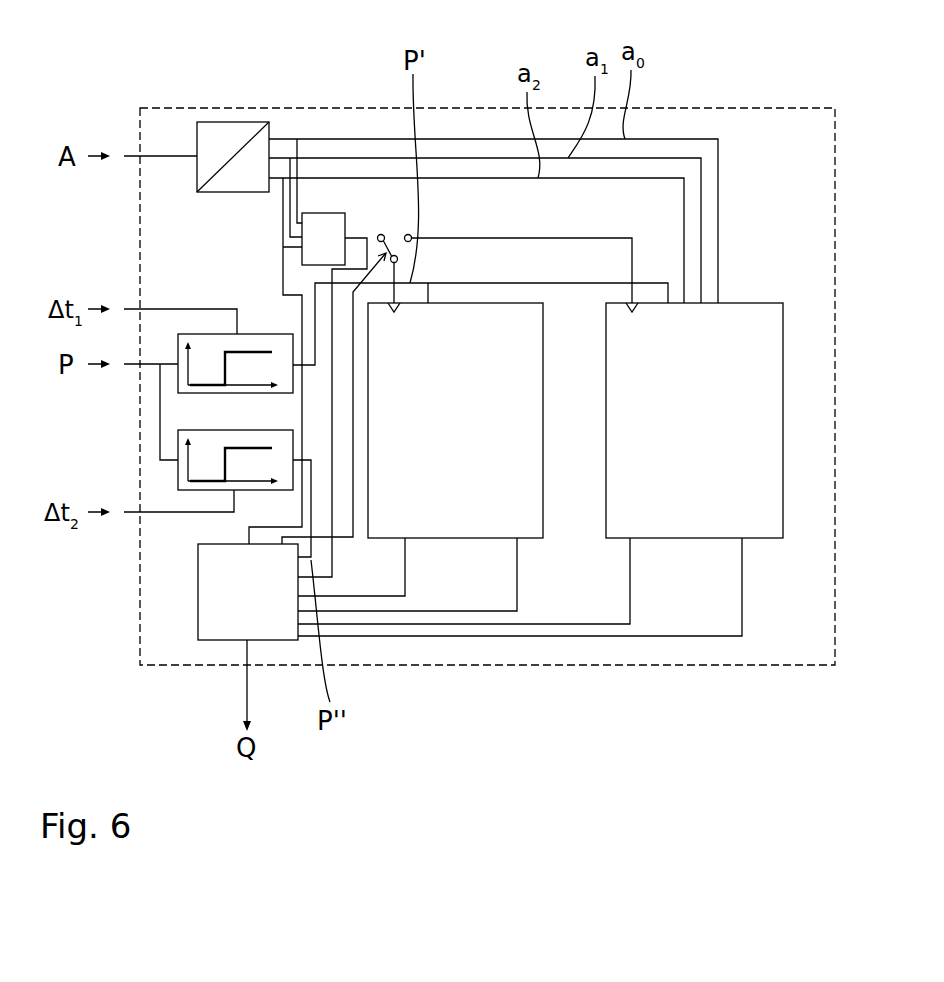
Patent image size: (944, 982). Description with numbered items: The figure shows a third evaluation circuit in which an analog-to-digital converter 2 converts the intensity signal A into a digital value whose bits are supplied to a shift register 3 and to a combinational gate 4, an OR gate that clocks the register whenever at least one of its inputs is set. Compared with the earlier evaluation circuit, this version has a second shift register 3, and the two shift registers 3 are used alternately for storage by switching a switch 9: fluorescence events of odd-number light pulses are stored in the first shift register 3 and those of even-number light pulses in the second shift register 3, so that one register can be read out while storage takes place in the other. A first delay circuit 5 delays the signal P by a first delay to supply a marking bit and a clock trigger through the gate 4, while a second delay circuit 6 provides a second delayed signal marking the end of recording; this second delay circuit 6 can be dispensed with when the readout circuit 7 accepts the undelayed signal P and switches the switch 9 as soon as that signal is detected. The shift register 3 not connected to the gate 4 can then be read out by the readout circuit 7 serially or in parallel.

The analog-to-digital converter 2 is at (245, 122).
The shift register 3 is at (783, 360).
The combinational gate 4 is at (323, 213).
The first delay circuit 5 is at (178, 387).
The second delay circuit 6 is at (176, 482).
The readout circuit 7 is at (197, 588).
The switch 9 is at (394, 226).